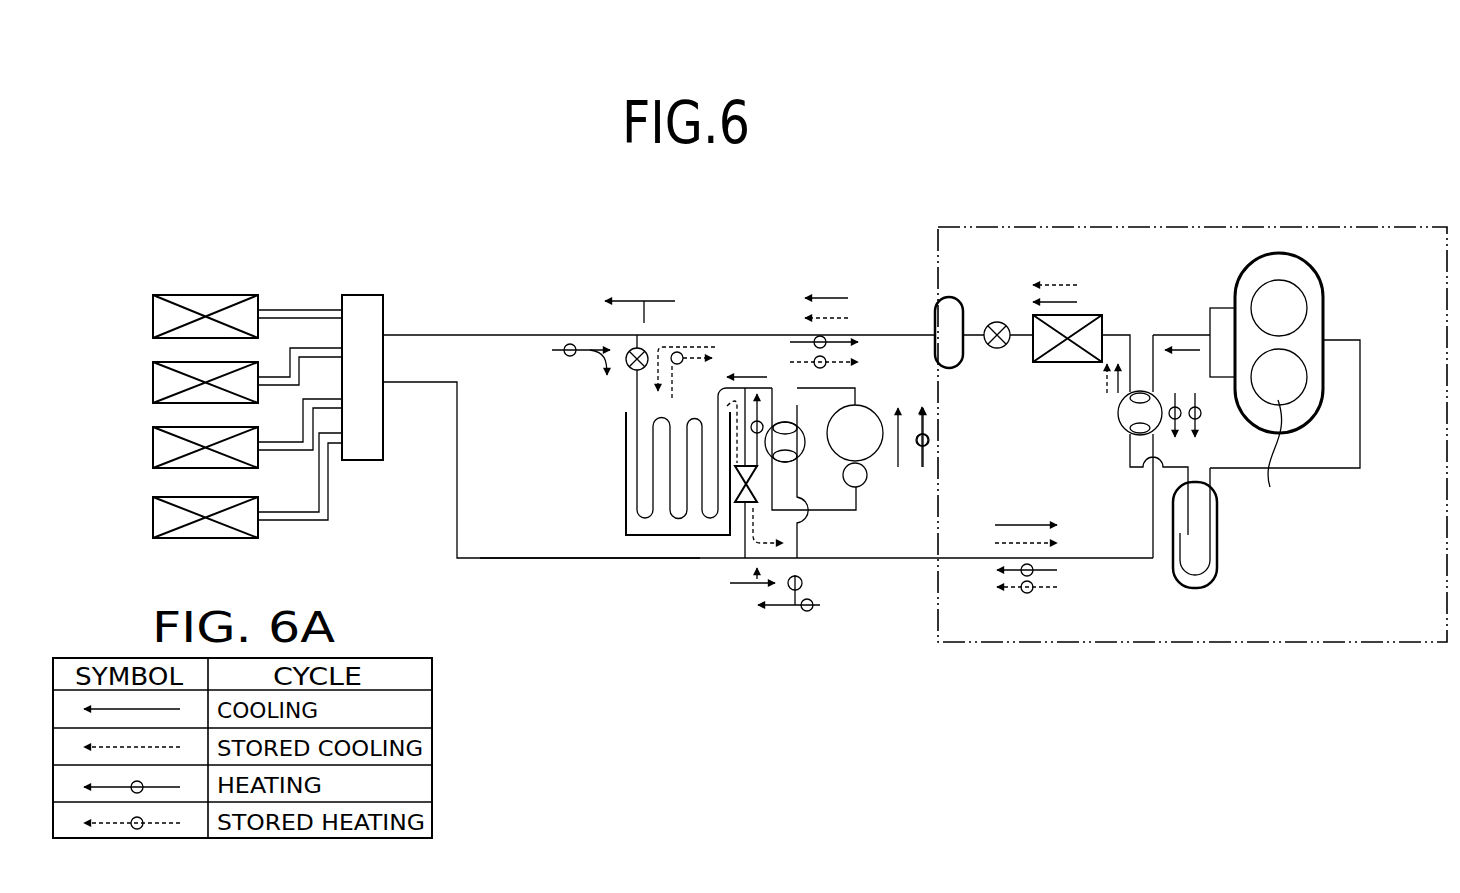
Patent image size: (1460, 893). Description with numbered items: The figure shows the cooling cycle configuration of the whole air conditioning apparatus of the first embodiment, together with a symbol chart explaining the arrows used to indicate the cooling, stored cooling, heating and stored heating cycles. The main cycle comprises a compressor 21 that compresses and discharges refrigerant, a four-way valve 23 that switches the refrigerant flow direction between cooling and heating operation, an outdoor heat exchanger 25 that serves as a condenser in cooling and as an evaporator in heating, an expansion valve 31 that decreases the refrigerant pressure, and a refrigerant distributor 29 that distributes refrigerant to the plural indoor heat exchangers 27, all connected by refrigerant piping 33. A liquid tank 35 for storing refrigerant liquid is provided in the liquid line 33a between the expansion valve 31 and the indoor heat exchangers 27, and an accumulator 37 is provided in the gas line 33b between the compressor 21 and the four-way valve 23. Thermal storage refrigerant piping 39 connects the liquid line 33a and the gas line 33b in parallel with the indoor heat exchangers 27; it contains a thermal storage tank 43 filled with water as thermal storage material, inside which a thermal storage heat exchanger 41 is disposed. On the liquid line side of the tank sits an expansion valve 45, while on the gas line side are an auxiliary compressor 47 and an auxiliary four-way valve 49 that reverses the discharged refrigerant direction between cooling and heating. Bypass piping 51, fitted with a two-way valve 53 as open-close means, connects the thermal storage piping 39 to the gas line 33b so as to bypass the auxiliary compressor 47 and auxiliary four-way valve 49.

The compressor 21 is at (1313, 262).
The 4-way valve 23 is at (1118, 413).
The outdoor heat exchanger 25 is at (1102, 320).
The indoor heat exchanger 27 is at (150, 507).
The refrigerant distributor 29 is at (362, 295).
The expansion valve 31 is at (997, 322).
The refrigerant piping 33 is at (535, 566).
The liquid line 33a is at (458, 333).
The gas line 33b is at (477, 560).
The liquid tank 35 is at (949, 297).
The accumulator 37 is at (1215, 580).
The thermal storage refrigerant piping 39 is at (632, 390).
The thermal storage heat exchanger 41 is at (692, 418).
The thermal storage tank 43 is at (626, 505).
The expansion valve 45 is at (627, 352).
The auxiliary compressor 47 is at (867, 410).
The auxiliary 4-way valve 49 is at (802, 462).
The bypass piping 51 is at (743, 548).
The 2-way valve 53 is at (742, 505).